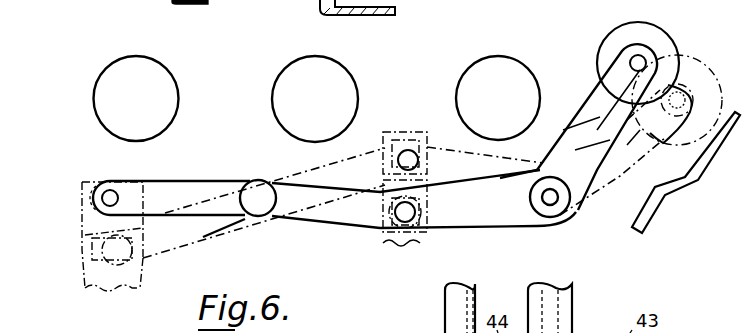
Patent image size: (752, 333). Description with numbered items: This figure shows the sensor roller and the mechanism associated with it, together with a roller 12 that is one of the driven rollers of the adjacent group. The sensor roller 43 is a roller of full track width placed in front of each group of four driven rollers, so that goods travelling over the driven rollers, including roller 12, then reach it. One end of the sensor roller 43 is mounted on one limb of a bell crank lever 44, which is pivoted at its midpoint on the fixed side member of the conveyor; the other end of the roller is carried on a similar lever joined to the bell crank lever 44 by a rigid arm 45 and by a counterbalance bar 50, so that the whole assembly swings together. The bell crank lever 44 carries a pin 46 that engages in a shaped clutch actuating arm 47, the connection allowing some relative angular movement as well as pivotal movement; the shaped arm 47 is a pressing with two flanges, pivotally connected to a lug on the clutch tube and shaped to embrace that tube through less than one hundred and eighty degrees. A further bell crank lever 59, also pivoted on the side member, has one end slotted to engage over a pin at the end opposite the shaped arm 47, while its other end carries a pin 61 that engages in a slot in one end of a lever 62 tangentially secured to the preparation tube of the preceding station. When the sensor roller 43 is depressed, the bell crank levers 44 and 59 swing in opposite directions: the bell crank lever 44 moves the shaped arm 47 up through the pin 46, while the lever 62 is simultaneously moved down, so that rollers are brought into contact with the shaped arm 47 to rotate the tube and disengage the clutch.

The roller 12 is at (500, 67).
The sensor roller 43 is at (640, 30).
The bell crank lever 44 is at (574, 178).
The rigid arm 45 is at (562, 322).
The pin 46 is at (415, 225).
The shaped clutch actuating arm 47 is at (387, 243).
The counterbalance bar 50 is at (453, 310).
The further bell crank lever 59 is at (345, 222).
The pin 61 is at (101, 199).
The lever 62 is at (84, 268).